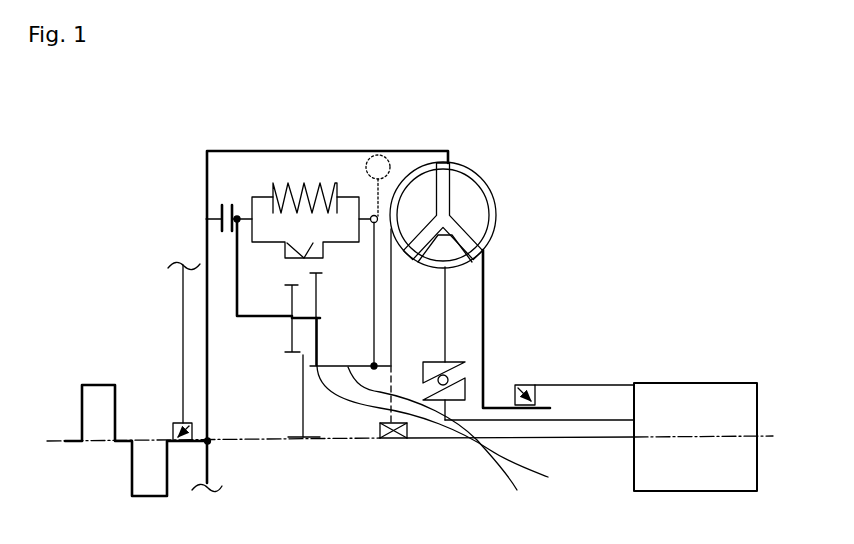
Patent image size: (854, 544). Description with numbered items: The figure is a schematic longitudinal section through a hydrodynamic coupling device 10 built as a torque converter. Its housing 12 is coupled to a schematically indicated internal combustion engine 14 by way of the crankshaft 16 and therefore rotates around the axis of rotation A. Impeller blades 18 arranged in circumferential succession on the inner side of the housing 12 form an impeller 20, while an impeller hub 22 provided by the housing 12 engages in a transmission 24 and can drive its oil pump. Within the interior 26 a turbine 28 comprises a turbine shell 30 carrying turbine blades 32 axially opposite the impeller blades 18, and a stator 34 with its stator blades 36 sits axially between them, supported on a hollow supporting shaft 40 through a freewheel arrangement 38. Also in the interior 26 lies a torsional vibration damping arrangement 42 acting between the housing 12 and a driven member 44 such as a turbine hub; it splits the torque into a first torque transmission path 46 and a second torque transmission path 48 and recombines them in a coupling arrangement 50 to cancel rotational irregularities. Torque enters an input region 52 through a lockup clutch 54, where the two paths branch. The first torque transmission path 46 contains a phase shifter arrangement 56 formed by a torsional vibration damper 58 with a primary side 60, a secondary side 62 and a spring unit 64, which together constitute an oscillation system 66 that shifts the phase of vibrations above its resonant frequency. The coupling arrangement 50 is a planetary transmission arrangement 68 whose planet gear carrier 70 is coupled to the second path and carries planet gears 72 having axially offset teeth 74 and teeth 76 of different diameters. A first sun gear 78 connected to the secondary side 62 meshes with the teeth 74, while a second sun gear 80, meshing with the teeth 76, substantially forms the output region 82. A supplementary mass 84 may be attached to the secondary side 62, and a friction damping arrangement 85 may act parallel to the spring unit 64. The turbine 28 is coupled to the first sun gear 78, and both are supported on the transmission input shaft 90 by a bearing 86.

The hydrodynamic coupling device 10 is at (562, 100).
The housing 12 is at (253, 196).
The internal combustion engine 14 is at (183, 355).
The crankshaft 16 is at (81, 413).
The impeller blades 18 is at (478, 200).
The impeller 20 is at (495, 218).
The impeller hub 22 is at (545, 402).
The transmission 24 is at (694, 395).
The interior 26 is at (413, 150).
The turbine 28 is at (472, 173).
The turbine shell 30 is at (392, 300).
The turbine blades 32 is at (427, 198).
The stator 34 is at (445, 325).
The stator blades 36 is at (450, 248).
The freewheel arrangement 38 is at (460, 390).
The hollow supporting shaft 40 is at (613, 420).
The torsional vibration damping arrangement 42 is at (298, 170).
The driven member 44 is at (315, 440).
The first torque transmission path 46 is at (206, 151).
The second torque transmission path 48 is at (230, 253).
The coupling arrangement 50 is at (320, 405).
The input region 52 is at (251, 198).
The lockup clutch 54 is at (221, 212).
The phase shifter arrangement 56 is at (331, 167).
The torsional vibration damper 58 is at (285, 172).
The primary side 60 is at (247, 189).
The secondary side 62 is at (362, 203).
The spring unit 64 is at (292, 243).
The oscillation system 66 is at (265, 122).
The planetary transmission arrangement 68 is at (287, 395).
The planet gear carrier 70 is at (250, 318).
The planet gears 72 is at (291, 303).
The teeth 74 is at (437, 444).
The teeth 76 is at (289, 286).
The first sun gear 78 is at (438, 435).
The second sun gear 80 is at (287, 353).
The output region 82 is at (295, 423).
The supplementary mass 84 is at (378, 155).
The friction damping arrangement 85 is at (242, 186).
The bearing 86 is at (402, 432).
The transmission input shaft 90 is at (623, 437).
The axis of rotation A is at (770, 438).